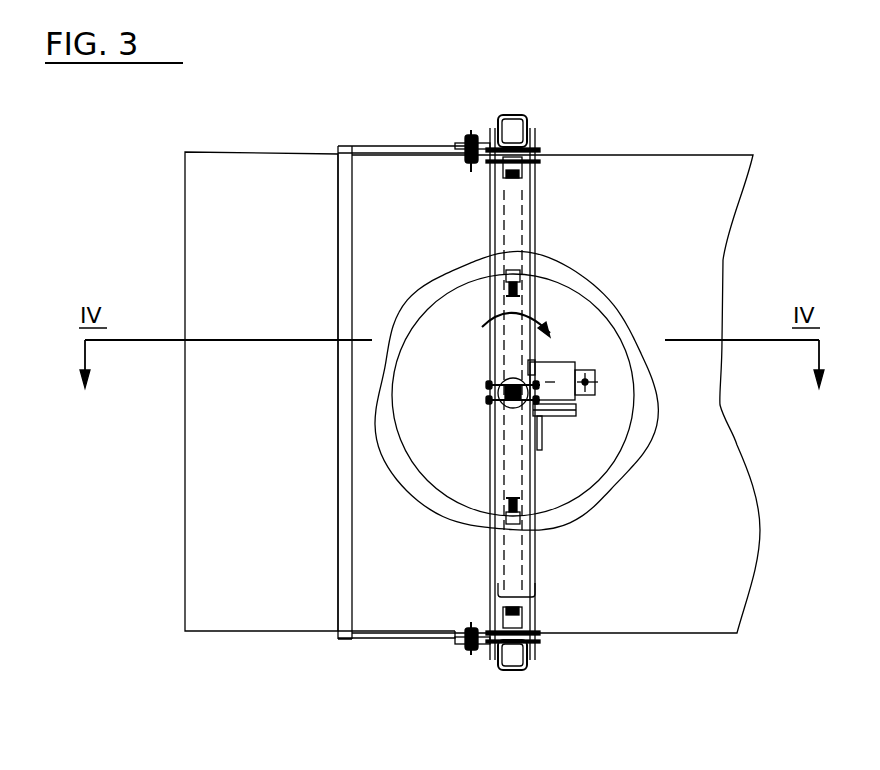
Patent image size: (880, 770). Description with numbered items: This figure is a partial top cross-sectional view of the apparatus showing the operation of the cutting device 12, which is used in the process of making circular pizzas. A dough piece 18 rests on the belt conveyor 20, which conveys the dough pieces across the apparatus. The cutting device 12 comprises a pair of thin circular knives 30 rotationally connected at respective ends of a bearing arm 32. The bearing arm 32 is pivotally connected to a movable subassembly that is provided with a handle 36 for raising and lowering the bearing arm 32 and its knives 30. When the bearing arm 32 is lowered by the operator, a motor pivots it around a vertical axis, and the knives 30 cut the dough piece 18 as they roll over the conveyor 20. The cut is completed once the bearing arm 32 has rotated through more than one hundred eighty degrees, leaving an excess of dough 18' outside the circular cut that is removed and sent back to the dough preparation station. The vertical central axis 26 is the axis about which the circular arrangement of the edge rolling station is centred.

The cutting device 12 is at (593, 556).
The dough piece 18 is at (543, 401).
The excess of dough 18' is at (586, 390).
The belt conveyor 20 is at (617, 173).
The vertical central axis 26 is at (528, 670).
The circular knives 30 is at (523, 277).
The bearing arm 32 is at (503, 462).
The handle 36 is at (340, 249).